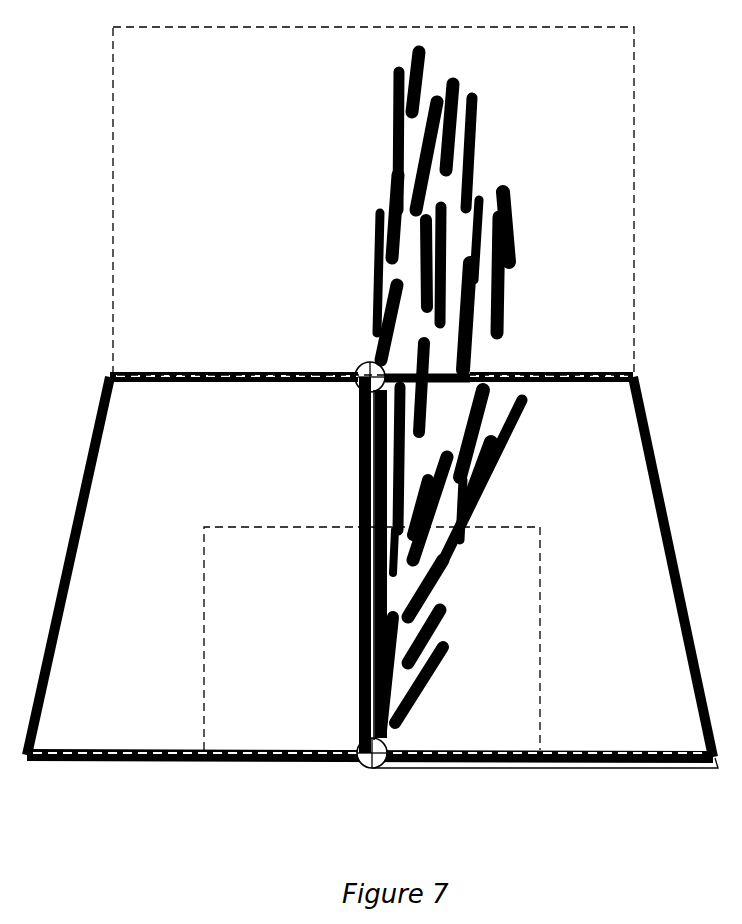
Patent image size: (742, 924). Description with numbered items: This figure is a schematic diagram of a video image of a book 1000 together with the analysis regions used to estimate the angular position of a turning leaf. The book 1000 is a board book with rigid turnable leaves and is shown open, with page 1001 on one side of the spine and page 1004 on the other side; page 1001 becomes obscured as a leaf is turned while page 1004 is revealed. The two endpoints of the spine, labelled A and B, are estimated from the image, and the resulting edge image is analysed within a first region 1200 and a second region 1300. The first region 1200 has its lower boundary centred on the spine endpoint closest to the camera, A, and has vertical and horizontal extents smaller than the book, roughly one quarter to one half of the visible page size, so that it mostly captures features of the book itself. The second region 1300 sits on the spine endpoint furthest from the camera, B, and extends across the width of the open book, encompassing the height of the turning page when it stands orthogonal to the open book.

The book 1000 is at (204, 810).
The page 1 1001 is at (196, 565).
The page 4 1004 is at (543, 566).
The first region 1200 is at (204, 630).
The second region 1300 is at (115, 85).